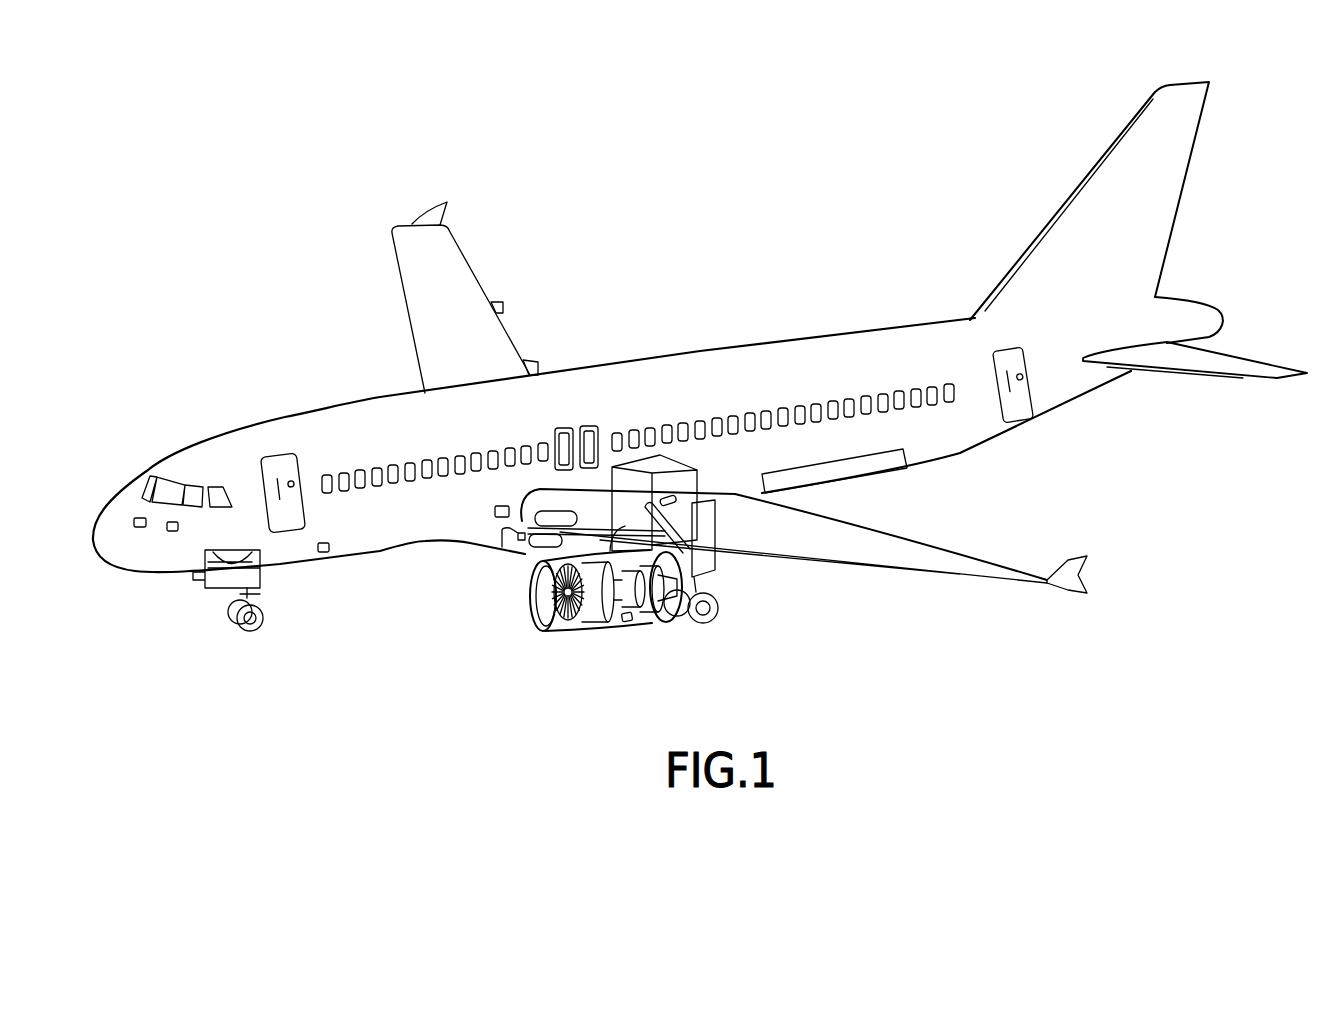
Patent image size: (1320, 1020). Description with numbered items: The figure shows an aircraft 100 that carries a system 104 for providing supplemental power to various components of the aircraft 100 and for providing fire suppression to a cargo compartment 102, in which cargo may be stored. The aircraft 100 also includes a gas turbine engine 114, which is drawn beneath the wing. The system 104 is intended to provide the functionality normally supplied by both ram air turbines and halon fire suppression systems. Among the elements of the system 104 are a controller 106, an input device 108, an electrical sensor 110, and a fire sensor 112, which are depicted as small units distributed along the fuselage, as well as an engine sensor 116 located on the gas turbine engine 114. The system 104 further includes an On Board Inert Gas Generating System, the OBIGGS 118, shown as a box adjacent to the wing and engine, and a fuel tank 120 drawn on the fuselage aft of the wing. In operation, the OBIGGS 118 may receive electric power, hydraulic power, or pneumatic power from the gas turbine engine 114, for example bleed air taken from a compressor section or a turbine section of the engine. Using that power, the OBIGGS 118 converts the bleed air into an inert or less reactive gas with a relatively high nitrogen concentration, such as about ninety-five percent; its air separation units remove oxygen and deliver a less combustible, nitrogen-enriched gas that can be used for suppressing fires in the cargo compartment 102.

The aircraft 100 is at (751, 150).
The cargo compartment 102 is at (428, 528).
The system 104 is at (517, 558).
The controller 106 is at (504, 505).
The input device 108 is at (140, 527).
The electrical sensor 110 is at (172, 531).
The fire sensor 112 is at (324, 552).
The gas turbine engine 114 is at (592, 642).
The engine sensor 116 is at (631, 622).
The On Board Inert Gas Generating System (OBIGGS) 118 is at (685, 457).
The fuel tank 120 is at (822, 481).